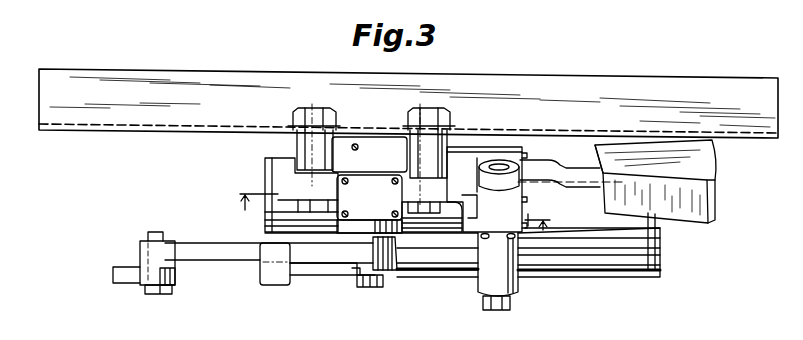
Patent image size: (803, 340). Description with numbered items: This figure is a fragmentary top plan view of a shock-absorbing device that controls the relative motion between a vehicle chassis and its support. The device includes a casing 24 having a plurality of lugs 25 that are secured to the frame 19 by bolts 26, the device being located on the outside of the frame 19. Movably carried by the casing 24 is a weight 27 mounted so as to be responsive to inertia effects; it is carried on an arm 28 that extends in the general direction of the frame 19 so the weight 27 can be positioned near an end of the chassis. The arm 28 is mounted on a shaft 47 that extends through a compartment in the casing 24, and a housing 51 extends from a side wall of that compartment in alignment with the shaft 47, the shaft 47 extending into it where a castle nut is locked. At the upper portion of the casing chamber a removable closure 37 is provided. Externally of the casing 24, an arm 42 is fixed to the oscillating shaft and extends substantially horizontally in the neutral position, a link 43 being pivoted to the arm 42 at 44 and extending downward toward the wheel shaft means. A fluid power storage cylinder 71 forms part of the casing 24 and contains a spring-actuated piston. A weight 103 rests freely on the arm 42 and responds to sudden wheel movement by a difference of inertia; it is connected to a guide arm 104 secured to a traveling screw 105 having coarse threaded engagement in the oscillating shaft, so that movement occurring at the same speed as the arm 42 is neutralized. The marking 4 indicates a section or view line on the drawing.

The frame 19 is at (176, 90).
The bolts 26 is at (312, 110).
The lugs 25 is at (295, 147).
The casing 24 is at (312, 182).
The removable closure 37 is at (369, 178).
The shaft 47 is at (500, 166).
The arm 28 is at (555, 167).
The weight 27 is at (692, 197).
The cylinder 71 is at (580, 270).
The housing 51 is at (488, 280).
The arm 42 is at (208, 254).
The link 43 is at (123, 275).
The pivot 44 is at (156, 290).
The weight 103 is at (273, 270).
The arm 104 is at (327, 278).
The screw 105 is at (373, 288).
The section line 4 is at (394, 213).